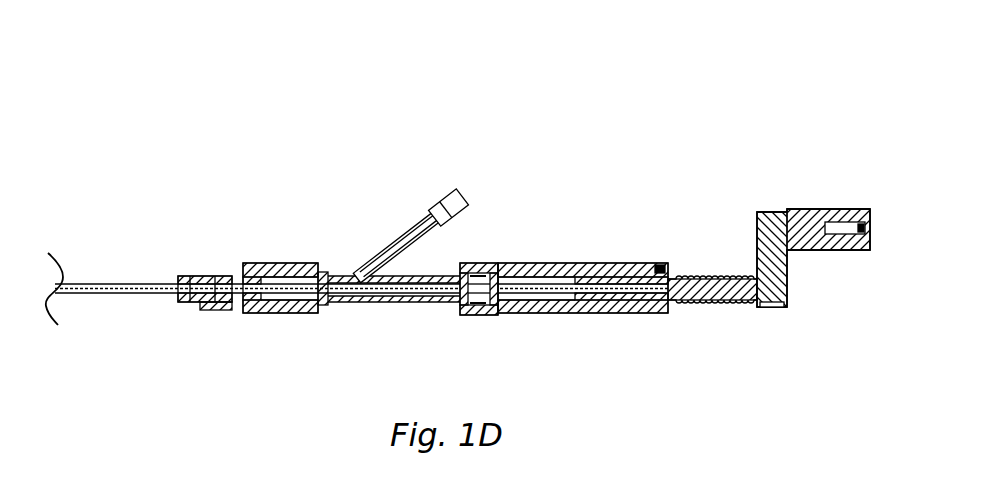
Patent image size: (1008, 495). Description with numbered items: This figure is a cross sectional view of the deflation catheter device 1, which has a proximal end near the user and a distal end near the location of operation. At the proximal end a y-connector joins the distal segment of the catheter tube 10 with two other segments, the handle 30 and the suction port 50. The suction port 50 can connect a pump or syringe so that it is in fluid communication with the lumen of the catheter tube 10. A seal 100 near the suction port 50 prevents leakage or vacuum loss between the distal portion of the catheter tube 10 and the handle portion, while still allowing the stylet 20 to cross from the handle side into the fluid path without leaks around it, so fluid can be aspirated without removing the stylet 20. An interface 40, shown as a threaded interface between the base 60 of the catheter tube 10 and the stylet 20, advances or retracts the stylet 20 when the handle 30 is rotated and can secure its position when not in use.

The deflation catheter device 1 is at (321, 116).
The catheter tube 10 is at (152, 283).
The stylet 20 is at (93, 283).
The handle 30 is at (817, 207).
The interface 40 is at (710, 278).
The suction port 50 is at (445, 187).
The base 60 is at (617, 267).
The seal 100 is at (473, 267).